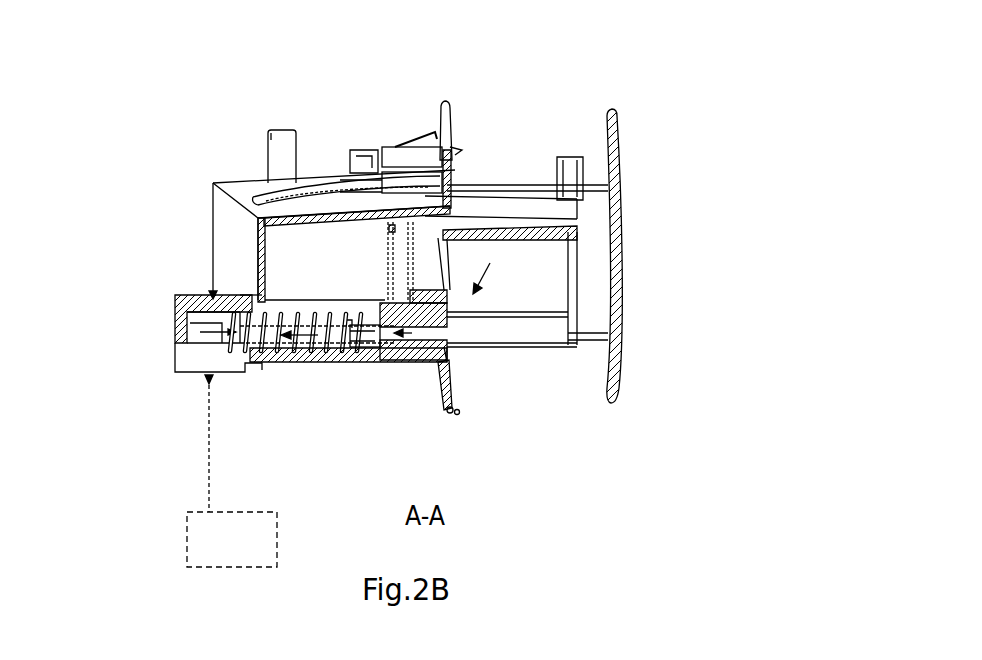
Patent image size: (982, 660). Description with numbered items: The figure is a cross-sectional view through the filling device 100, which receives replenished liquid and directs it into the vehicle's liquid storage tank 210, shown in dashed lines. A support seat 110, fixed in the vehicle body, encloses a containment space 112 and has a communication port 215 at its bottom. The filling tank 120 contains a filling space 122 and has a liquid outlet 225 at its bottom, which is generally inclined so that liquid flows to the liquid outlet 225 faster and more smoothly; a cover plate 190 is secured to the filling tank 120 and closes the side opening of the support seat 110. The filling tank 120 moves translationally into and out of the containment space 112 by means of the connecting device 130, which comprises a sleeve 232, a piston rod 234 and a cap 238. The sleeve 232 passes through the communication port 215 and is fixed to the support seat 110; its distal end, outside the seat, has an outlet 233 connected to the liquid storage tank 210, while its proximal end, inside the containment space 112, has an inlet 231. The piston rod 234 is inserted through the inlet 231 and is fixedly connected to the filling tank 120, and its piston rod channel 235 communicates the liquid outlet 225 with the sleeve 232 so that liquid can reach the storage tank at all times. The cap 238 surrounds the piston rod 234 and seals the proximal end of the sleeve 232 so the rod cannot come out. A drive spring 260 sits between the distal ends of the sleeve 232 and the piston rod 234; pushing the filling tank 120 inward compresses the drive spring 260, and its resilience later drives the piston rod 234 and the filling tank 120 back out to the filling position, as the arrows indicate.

The filling device 100 is at (742, 166).
The support seat 110 is at (237, 183).
The containment space 112 is at (327, 253).
The filling tank 120 is at (540, 230).
The filling space 122 is at (506, 277).
The connecting device 130 is at (430, 447).
The cover plate 190 is at (613, 338).
The liquid storage tank 210 is at (187, 530).
The communication port 215 is at (256, 300).
The liquid outlet 225 is at (447, 347).
The inlet 231 is at (453, 378).
The sleeve 232 is at (323, 364).
The outlet 233 is at (208, 363).
The piston rod 234 is at (414, 349).
The piston rod channel 235 is at (451, 352).
The cap 238 is at (372, 362).
The drive spring 260 is at (289, 352).